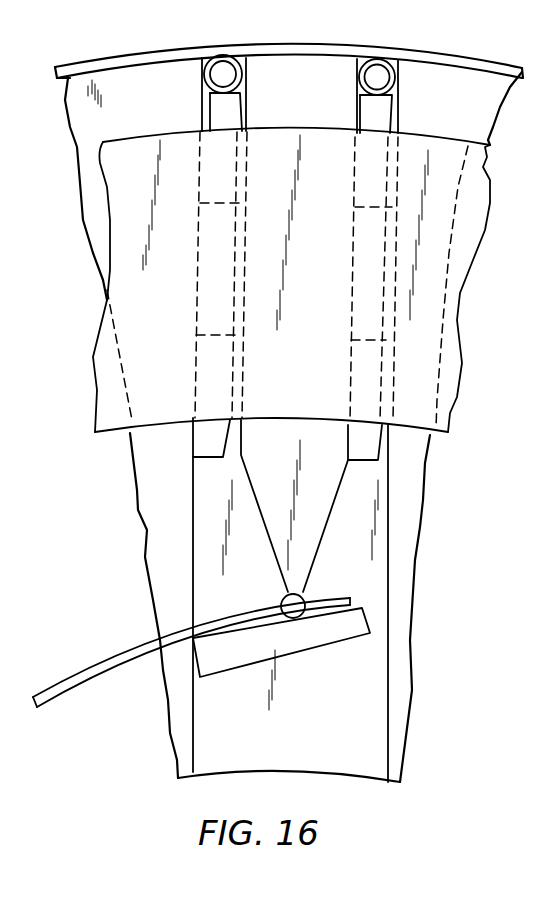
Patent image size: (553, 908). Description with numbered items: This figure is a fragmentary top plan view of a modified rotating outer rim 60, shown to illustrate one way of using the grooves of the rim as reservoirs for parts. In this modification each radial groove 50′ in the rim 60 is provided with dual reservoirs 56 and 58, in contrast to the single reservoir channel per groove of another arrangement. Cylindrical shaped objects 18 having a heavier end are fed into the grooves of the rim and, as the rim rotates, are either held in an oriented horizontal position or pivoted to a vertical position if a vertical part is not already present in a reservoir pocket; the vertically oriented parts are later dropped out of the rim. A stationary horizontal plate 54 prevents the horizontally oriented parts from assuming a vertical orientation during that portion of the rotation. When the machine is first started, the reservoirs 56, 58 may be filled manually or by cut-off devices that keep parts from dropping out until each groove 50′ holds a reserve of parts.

The cylindrical shaped object 18 is at (293, 638).
The radial groove 50′ is at (363, 718).
The stationary horizontal plate 54 is at (460, 408).
The reservoir 56 is at (242, 68).
The reservoir 58 is at (397, 72).
The rim 60 is at (408, 517).